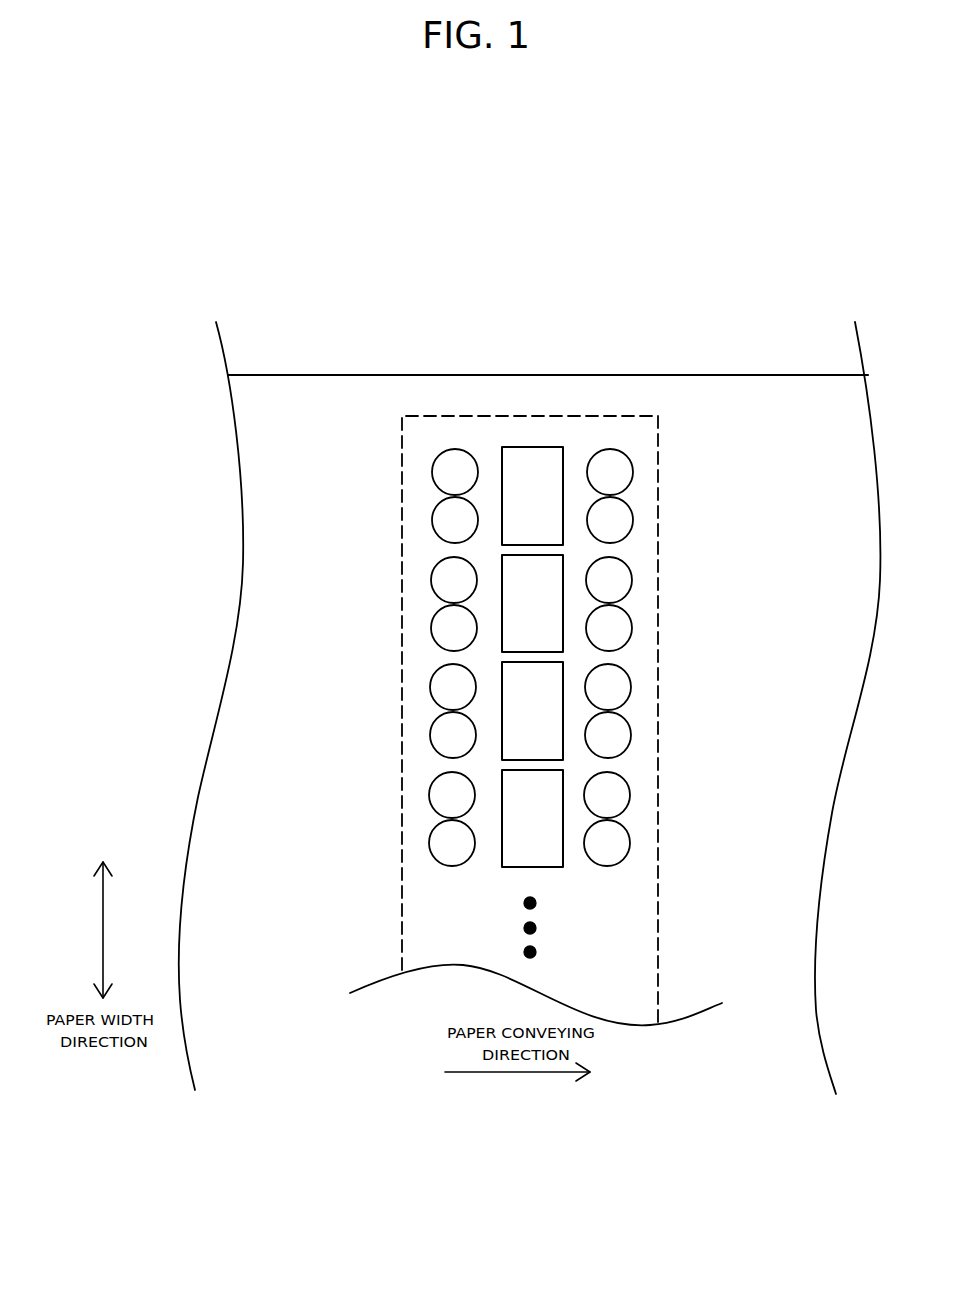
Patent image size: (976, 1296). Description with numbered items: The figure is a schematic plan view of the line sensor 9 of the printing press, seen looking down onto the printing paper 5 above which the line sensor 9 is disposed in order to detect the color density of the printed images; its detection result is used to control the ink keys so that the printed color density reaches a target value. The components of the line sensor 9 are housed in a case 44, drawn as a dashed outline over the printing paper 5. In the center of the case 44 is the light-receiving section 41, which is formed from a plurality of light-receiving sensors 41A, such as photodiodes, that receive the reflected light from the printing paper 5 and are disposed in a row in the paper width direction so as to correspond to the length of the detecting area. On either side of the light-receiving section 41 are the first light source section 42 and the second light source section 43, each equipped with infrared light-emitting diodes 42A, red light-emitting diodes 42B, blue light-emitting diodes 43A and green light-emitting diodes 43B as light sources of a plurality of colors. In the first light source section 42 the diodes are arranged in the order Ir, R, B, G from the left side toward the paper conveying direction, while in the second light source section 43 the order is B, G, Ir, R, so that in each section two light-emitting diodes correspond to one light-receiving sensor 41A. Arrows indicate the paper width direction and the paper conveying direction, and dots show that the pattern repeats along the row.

The printing paper 5 is at (742, 390).
The line sensor 9 is at (377, 798).
The case 44 is at (441, 416).
The light-receiving section 41 is at (559, 598).
The light-receiving sensor 41A is at (545, 462).
The first light source section 42 is at (402, 640).
The infrared light-emitting diode 42A is at (430, 476).
The red light-emitting diode 42B is at (430, 530).
The second light source section 43 is at (655, 639).
The blue light-emitting diode 43A is at (634, 475).
The green light-emitting diode 43B is at (634, 530).